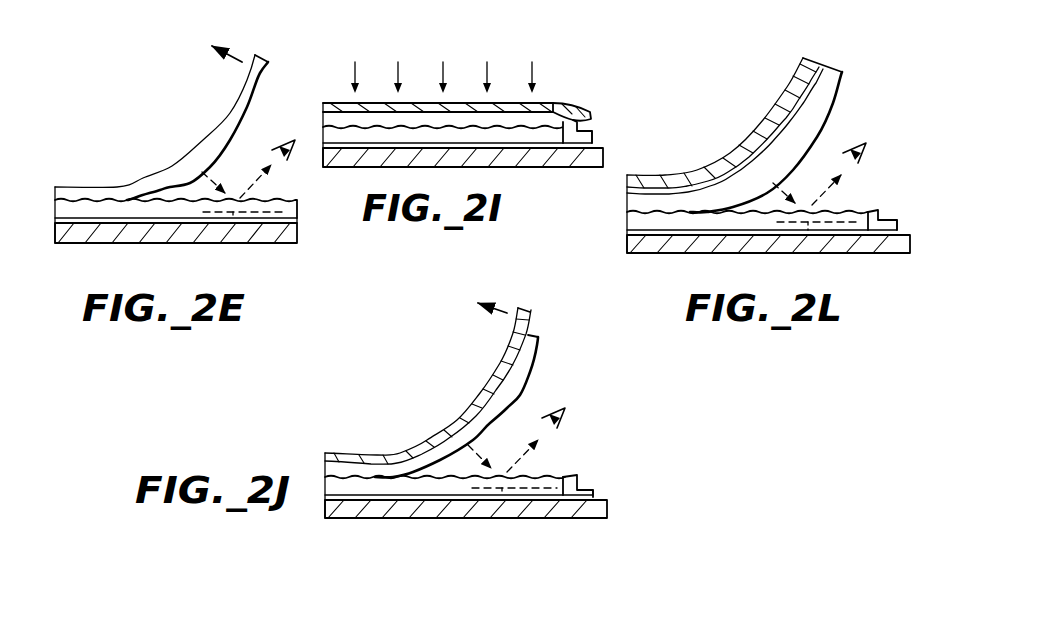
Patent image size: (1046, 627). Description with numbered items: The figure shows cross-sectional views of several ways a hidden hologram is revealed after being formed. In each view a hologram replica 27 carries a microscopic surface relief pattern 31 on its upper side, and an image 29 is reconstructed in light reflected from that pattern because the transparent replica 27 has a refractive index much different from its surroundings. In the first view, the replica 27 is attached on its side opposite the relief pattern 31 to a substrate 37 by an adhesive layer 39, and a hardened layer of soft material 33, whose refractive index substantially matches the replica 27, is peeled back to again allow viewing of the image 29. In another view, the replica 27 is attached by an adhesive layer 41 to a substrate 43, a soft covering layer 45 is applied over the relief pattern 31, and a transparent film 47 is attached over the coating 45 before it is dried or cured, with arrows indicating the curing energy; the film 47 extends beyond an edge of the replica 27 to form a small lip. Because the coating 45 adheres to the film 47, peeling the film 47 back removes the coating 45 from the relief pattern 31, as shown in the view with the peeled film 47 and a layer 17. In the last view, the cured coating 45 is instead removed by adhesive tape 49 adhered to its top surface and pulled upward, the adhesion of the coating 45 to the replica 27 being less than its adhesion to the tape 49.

In FIG. 2J, the layer 17 is at (553, 482).
In FIG. 2E, the hologram replica 27 is at (117, 207).
In FIG. 2I, the hologram replica 27 is at (547, 137).
In FIG. 2L, the hologram replica 27 is at (663, 222).
In FIG. 2E, the image 29 is at (235, 230).
In FIG. 2L, the image 29 is at (803, 247).
In FIG. 2J, the image 29 is at (508, 510).
In FIG. 2E, the surface relief pattern 31 is at (263, 197).
In FIG. 2I, the surface relief pattern 31 is at (547, 127).
In FIG. 2L, the surface relief pattern 31 is at (833, 210).
In FIG. 2J, the surface relief pattern 31 is at (537, 475).
In FIG. 2E, the layer of soft material 33 is at (237, 108).
In FIG. 2E, the substrate 37 is at (273, 237).
In FIG. 2E, the adhesive layer 39 is at (297, 222).
In FIG. 2I, the adhesive layer 41 is at (494, 147).
In FIG. 2L, the adhesive layer 41 is at (645, 233).
In FIG. 2J, the adhesive layer 41 is at (390, 497).
In FIG. 2I, the substrate 43 is at (510, 160).
In FIG. 2L, the substrate 43 is at (847, 247).
In FIG. 2J, the substrate 43 is at (580, 510).
In FIG. 2I, the soft covering layer 45 is at (537, 118).
In FIG. 2L, the soft covering layer 45 is at (683, 198).
In FIG. 2J, the soft covering layer 45 is at (377, 468).
In FIG. 2I, the transparent film 47 is at (577, 104).
In FIG. 2J, the transparent film 47 is at (365, 457).
In FIG. 2L, the adhesive tape 49 is at (803, 53).